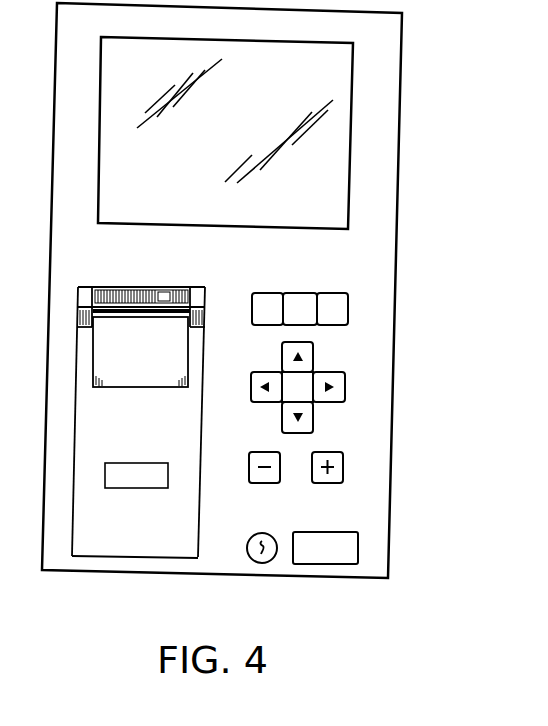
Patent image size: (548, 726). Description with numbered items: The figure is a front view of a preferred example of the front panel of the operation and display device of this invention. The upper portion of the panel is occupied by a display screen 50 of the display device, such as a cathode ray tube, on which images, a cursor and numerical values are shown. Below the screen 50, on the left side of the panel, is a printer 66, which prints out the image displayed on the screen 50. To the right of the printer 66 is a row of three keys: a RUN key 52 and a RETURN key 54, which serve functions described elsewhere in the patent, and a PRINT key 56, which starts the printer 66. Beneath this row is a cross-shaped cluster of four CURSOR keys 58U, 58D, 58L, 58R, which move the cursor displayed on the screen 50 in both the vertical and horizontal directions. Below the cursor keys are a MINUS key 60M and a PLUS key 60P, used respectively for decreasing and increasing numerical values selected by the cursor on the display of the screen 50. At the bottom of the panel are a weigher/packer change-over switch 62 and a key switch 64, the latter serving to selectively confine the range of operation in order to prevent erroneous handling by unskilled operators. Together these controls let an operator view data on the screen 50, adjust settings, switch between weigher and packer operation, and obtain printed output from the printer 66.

The display screen 50 is at (230, 142).
The RUN key 52 is at (263, 293).
The RETURN key 54 is at (300, 293).
The PRINT key 56 is at (333, 293).
The CURSOR key 58U is at (313, 355).
The CURSOR key 58L is at (282, 371).
The CURSOR key 58R is at (331, 402).
The CURSOR key 58D is at (282, 421).
The MINUS key 60M is at (262, 483).
The PLUS key 60P is at (336, 483).
The weigher/packer change-over switch 62 is at (336, 565).
The key switch 64 is at (262, 563).
The printer 66 is at (148, 431).